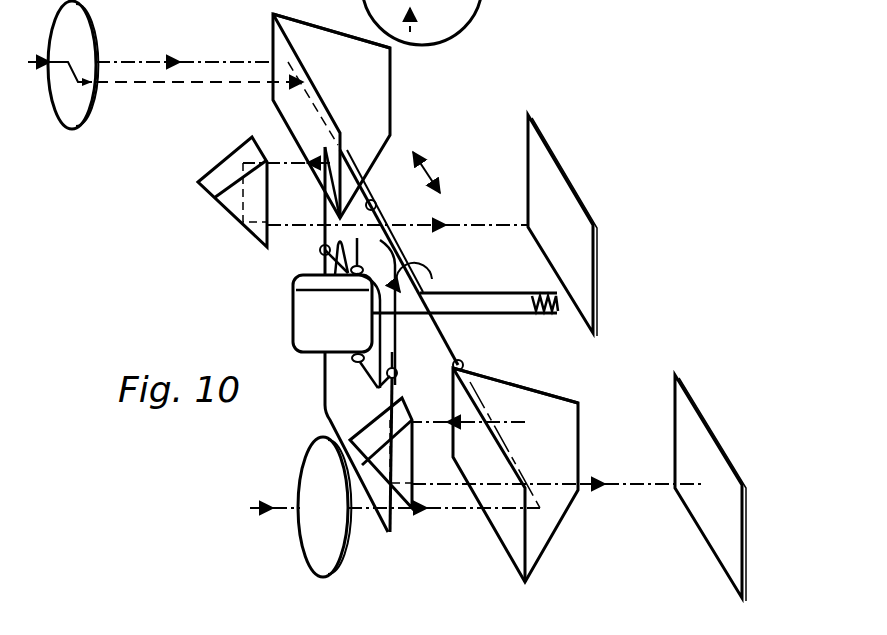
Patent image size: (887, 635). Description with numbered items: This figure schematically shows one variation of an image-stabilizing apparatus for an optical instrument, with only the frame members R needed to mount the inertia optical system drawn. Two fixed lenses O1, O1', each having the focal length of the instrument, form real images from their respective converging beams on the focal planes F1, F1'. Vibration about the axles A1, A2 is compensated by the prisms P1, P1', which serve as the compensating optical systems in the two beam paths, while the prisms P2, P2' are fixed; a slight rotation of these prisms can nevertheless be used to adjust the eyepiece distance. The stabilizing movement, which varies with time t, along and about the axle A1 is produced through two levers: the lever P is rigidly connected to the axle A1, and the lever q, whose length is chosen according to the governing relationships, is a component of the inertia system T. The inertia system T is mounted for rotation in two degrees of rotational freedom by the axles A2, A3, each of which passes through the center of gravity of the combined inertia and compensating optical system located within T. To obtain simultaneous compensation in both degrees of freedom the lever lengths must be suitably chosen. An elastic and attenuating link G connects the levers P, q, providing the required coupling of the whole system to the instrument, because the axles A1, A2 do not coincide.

The fixed lens O1 is at (86, 65).
The fixed lens O1' is at (306, 505).
The axle A1 is at (413, 286).
The axle A2 is at (360, 319).
The axle A3 is at (322, 246).
The prism P1 is at (352, 116).
The prism P1' is at (535, 475).
The fixed prism P2 is at (221, 192).
The fixed prism P2' is at (371, 453).
The focal plane F1 is at (569, 225).
The focal plane F1' is at (710, 488).
The frame member R is at (518, 0).
The inertia system T is at (320, 314).
The lever P is at (464, 291).
The lever q is at (410, 260).
The elastic and attenuating link G is at (546, 319).
The time t is at (199, 86).